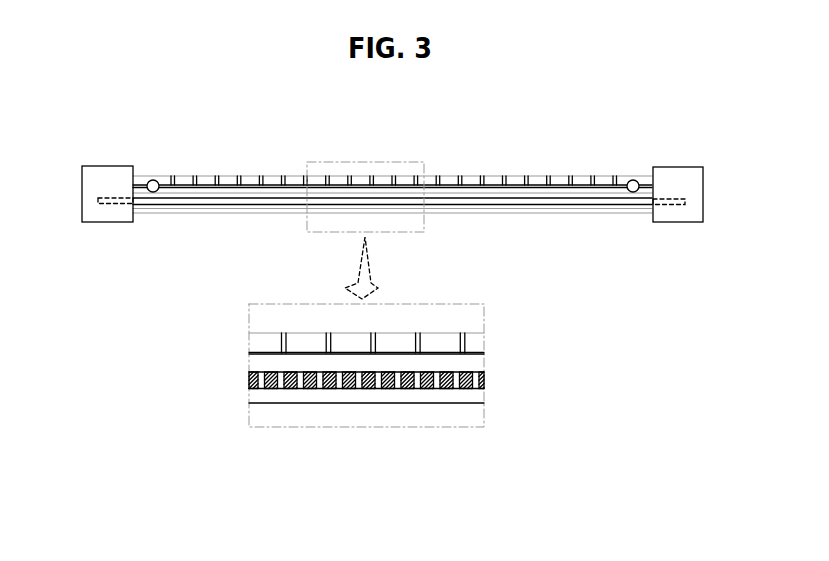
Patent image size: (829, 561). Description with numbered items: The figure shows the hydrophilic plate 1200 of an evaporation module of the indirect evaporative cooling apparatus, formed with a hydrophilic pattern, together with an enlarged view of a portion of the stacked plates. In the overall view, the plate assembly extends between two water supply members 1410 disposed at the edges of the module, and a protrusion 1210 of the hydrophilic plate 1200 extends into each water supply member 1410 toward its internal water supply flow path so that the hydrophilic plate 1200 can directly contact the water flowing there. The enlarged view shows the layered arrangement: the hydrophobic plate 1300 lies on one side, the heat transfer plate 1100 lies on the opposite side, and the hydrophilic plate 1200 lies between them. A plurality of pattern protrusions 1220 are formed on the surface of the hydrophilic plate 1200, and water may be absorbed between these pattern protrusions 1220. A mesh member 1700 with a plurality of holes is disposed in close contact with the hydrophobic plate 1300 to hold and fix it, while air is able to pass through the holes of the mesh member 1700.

The water supply member 1410 is at (92, 187).
The protrusion 1210 is at (111, 207).
The mesh member 1700 is at (478, 342).
The hydrophobic plate 1300 is at (256, 364).
The hydrophilic plate 1200 is at (308, 421).
The pattern protrusion 1220 is at (238, 376).
The heat transfer plate 1100 is at (256, 397).